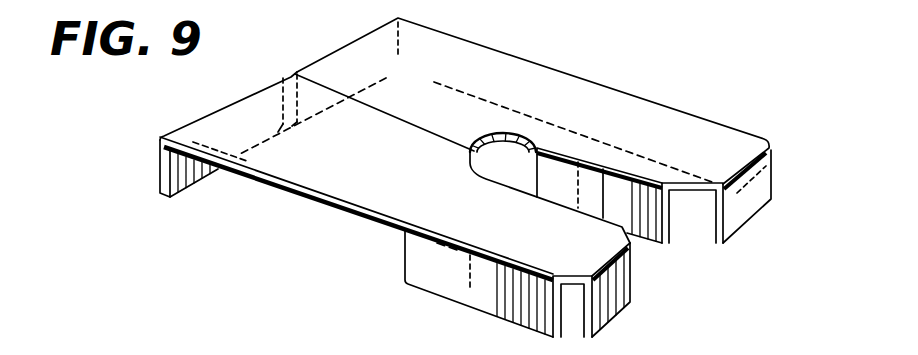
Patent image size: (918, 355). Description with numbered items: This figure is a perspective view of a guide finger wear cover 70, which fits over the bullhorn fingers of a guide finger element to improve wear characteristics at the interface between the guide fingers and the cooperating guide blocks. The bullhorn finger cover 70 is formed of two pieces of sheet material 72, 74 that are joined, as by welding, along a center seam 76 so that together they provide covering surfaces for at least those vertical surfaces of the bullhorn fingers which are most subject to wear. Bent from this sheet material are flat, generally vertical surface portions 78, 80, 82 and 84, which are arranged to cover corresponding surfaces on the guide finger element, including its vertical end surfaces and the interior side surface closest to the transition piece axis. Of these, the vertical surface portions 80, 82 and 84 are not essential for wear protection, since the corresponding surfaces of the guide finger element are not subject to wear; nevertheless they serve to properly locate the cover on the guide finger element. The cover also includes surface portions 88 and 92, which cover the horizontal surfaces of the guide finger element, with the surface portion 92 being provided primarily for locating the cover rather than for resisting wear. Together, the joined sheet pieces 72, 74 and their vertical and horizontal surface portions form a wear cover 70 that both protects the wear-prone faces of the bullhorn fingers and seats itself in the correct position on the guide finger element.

The wear cover 70 is at (722, 83).
The piece of sheet material 72 is at (497, 82).
The piece of sheet material 74 is at (346, 179).
The center seam 76 is at (420, 120).
The vertical surface portion 78 is at (553, 93).
The vertical surface portion 80 is at (744, 208).
The vertical surface portion 82 is at (615, 303).
The vertical surface portion 84 is at (193, 190).
The surface portion 88 is at (618, 176).
The surface portion 92 is at (502, 298).